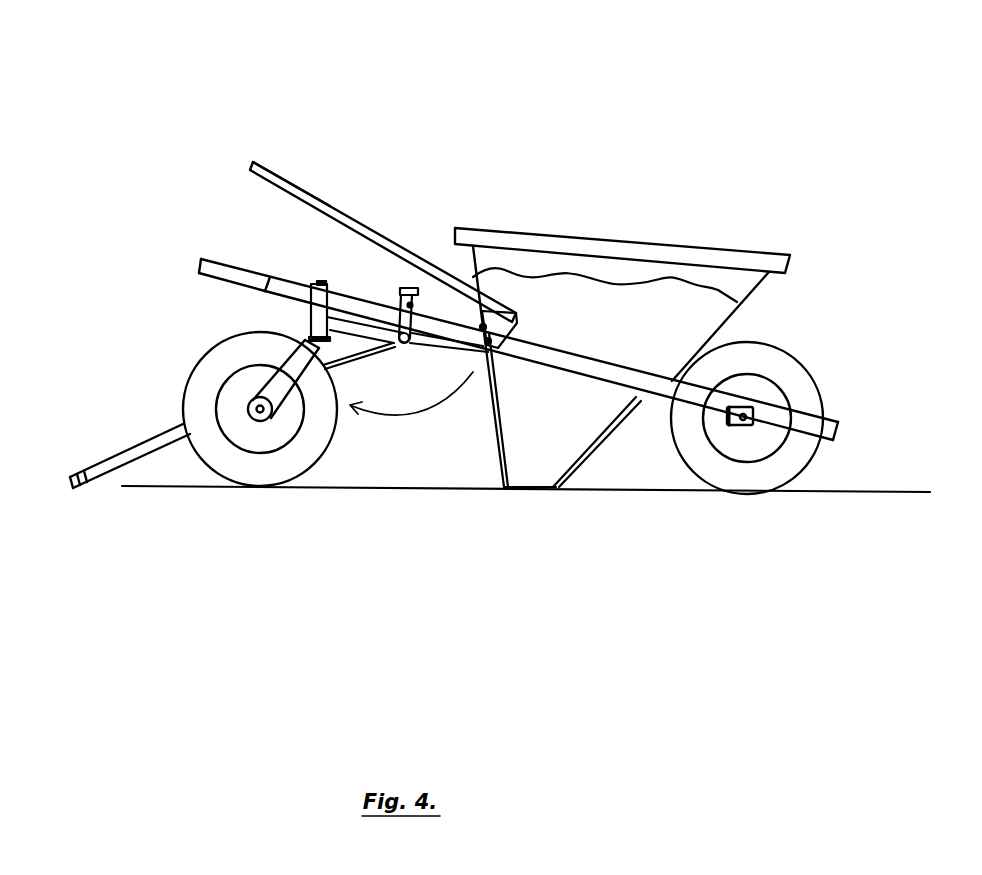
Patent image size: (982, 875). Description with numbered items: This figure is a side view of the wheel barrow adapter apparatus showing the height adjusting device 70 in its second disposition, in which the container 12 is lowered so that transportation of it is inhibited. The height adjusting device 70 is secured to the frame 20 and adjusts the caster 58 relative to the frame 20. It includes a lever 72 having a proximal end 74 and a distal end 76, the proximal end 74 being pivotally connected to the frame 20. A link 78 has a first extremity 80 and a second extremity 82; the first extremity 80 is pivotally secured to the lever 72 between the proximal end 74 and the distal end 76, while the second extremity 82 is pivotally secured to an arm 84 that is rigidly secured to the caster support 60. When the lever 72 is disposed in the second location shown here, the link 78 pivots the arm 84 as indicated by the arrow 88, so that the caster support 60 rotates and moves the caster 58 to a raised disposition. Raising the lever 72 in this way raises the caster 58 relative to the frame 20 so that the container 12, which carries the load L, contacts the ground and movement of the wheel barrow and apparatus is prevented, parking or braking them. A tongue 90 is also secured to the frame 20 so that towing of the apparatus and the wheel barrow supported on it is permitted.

The container 12 is at (603, 313).
The load L is at (667, 303).
The frame 20 is at (492, 350).
The caster 58 is at (260, 430).
The caster support 60 is at (257, 363).
The height adjusting device 70 is at (423, 247).
The lever 72 is at (313, 203).
The proximal end 74 is at (514, 320).
The distal end 76 is at (255, 162).
The link 78 is at (450, 311).
The first extremity 80 is at (484, 350).
The second extremity 82 is at (323, 367).
The arm 84 is at (403, 298).
The arrow 88 is at (392, 342).
The tongue 90 is at (147, 447).